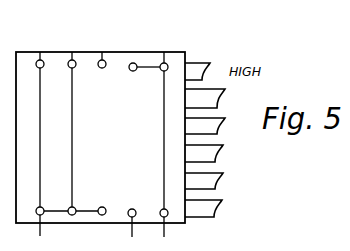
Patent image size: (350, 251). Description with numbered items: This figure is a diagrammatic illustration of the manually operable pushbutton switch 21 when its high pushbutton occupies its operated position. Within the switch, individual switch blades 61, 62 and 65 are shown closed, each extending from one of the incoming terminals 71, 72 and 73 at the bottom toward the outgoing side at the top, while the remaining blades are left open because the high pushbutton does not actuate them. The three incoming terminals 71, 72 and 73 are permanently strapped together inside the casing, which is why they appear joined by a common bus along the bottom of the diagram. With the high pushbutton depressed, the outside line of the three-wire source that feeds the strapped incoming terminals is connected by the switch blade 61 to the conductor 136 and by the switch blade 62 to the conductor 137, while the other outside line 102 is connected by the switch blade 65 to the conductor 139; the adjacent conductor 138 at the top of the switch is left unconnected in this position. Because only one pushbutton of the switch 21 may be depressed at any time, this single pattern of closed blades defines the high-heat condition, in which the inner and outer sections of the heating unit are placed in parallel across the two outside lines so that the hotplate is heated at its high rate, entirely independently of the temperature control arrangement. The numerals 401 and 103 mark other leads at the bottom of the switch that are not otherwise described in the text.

The pushbutton switch 21 is at (123, 108).
The conductor 136 is at (40, 44).
The conductor 137 is at (72, 44).
The contact 138 is at (102, 44).
The conductor 139 is at (165, 44).
The switch blade 61 is at (40, 131).
The switch blade 62 is at (72, 131).
The switch blade 65 is at (164, 151).
The incoming terminal 71 is at (40, 207).
The incoming terminal 72 is at (72, 207).
The incoming terminal 73 is at (105, 208).
The lead 401 is at (40, 233).
The lead 103 is at (132, 235).
The outside line 102 is at (164, 236).